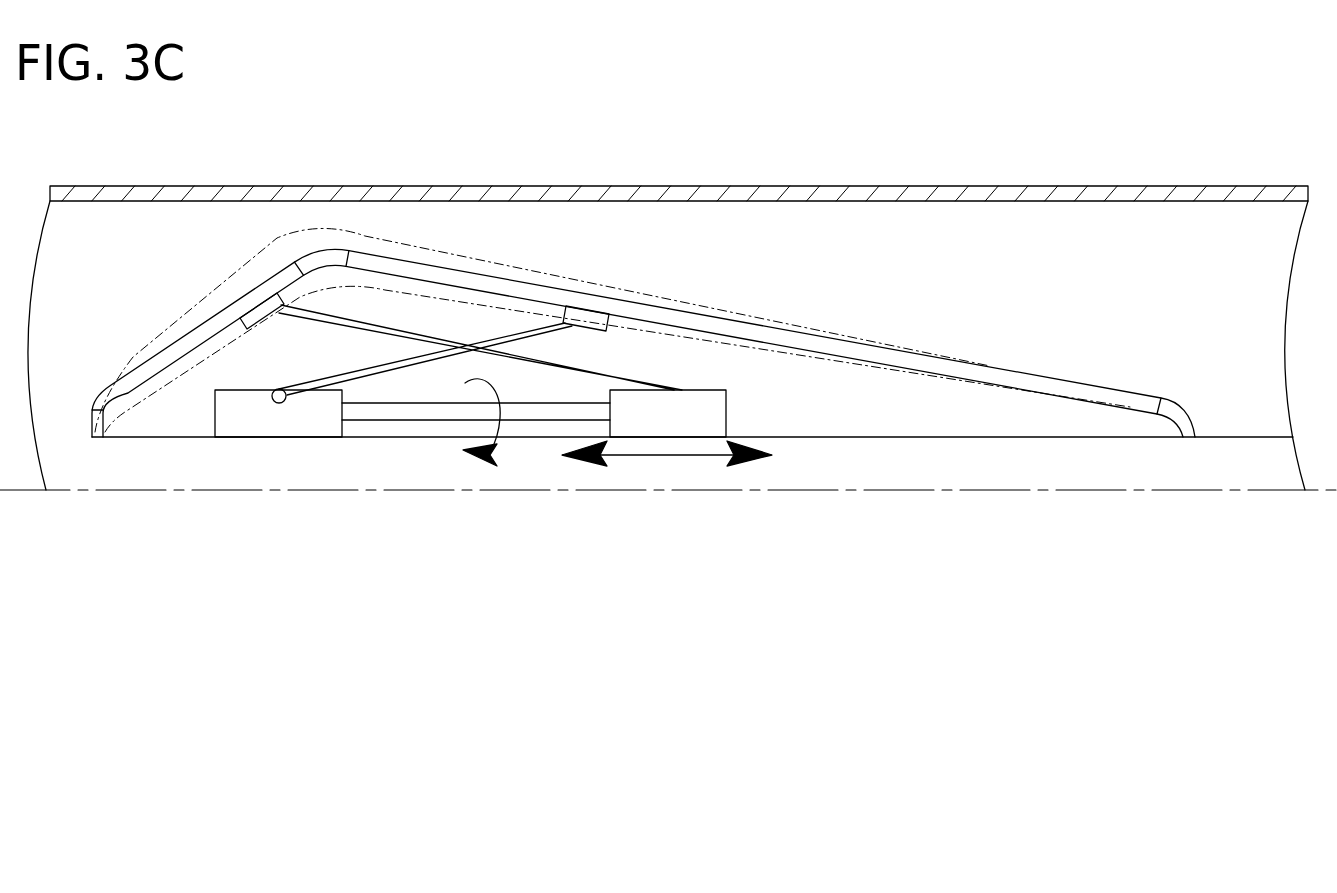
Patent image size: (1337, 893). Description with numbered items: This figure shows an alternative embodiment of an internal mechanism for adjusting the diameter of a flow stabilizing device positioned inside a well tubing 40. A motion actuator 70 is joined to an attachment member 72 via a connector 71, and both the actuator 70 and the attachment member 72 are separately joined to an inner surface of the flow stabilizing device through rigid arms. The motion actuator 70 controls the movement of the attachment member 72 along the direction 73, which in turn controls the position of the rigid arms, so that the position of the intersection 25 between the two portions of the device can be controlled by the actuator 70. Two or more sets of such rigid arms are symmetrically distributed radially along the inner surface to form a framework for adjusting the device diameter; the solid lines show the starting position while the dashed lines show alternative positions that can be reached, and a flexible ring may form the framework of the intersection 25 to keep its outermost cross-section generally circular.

The intersection 25 is at (325, 258).
The well tubing 40 is at (650, 195).
The motion actuator 70 is at (272, 420).
The connector 71 is at (403, 412).
The attachment member 72 is at (727, 410).
The direction 73 is at (664, 456).